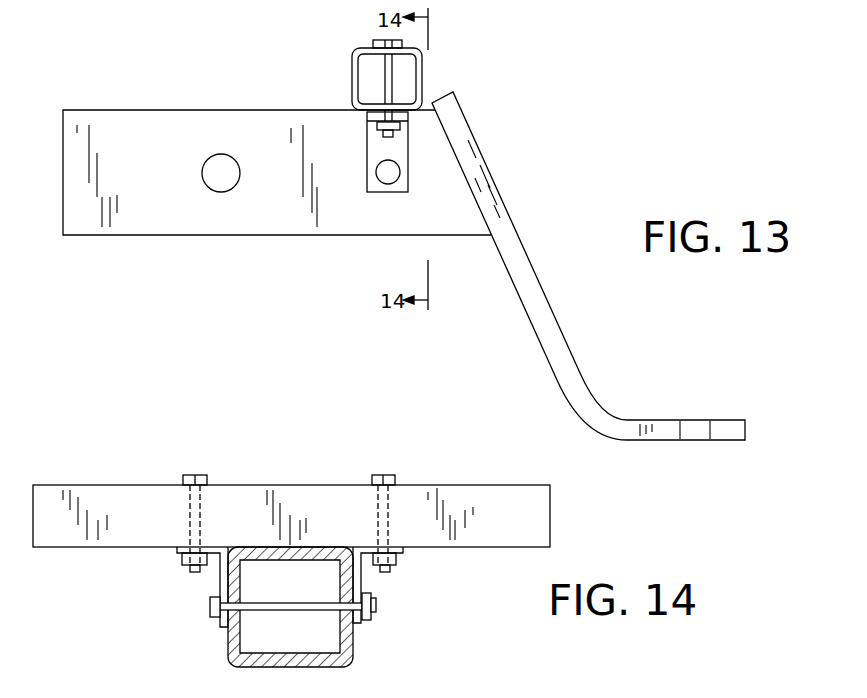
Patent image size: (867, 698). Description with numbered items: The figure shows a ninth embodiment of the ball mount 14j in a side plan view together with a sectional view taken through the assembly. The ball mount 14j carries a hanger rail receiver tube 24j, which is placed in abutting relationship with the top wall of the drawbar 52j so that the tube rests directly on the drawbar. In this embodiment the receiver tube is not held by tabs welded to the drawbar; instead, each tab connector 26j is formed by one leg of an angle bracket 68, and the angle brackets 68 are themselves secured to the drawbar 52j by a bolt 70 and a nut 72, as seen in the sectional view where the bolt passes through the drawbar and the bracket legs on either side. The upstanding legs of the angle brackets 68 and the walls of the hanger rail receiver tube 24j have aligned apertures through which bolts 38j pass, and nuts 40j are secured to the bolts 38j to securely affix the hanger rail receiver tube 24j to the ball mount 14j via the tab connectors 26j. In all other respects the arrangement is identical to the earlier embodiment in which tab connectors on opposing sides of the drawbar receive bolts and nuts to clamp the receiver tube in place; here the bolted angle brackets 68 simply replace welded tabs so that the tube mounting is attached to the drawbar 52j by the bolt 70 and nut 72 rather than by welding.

In FIG. 13, the ball mount 14j is at (531, 168).
In FIG. 13, the hanger rail receiver tube 24j is at (420, 70).
In FIG. 14, the hanger rail receiver tube 24j is at (78, 492).
In FIG. 13, the tab connector 26j is at (375, 124).
In FIG. 14, the tab connector 26j is at (177, 553).
In FIG. 13, the bolt 38j is at (375, 42).
In FIG. 14, the bolt 38j is at (200, 475).
In FIG. 13, the nut 40j is at (400, 128).
In FIG. 14, the nut 40j is at (183, 567).
In FIG. 13, the drawbar 52j is at (99, 124).
In FIG. 14, the drawbar 52j is at (233, 648).
In FIG. 13, the angle bracket 68 is at (357, 148).
In FIG. 14, the angle bracket 68 is at (204, 588).
In FIG. 13, the bolt 70 is at (388, 172).
In FIG. 14, the bolt 70 is at (212, 613).
In FIG. 14, the nut 72 is at (368, 618).